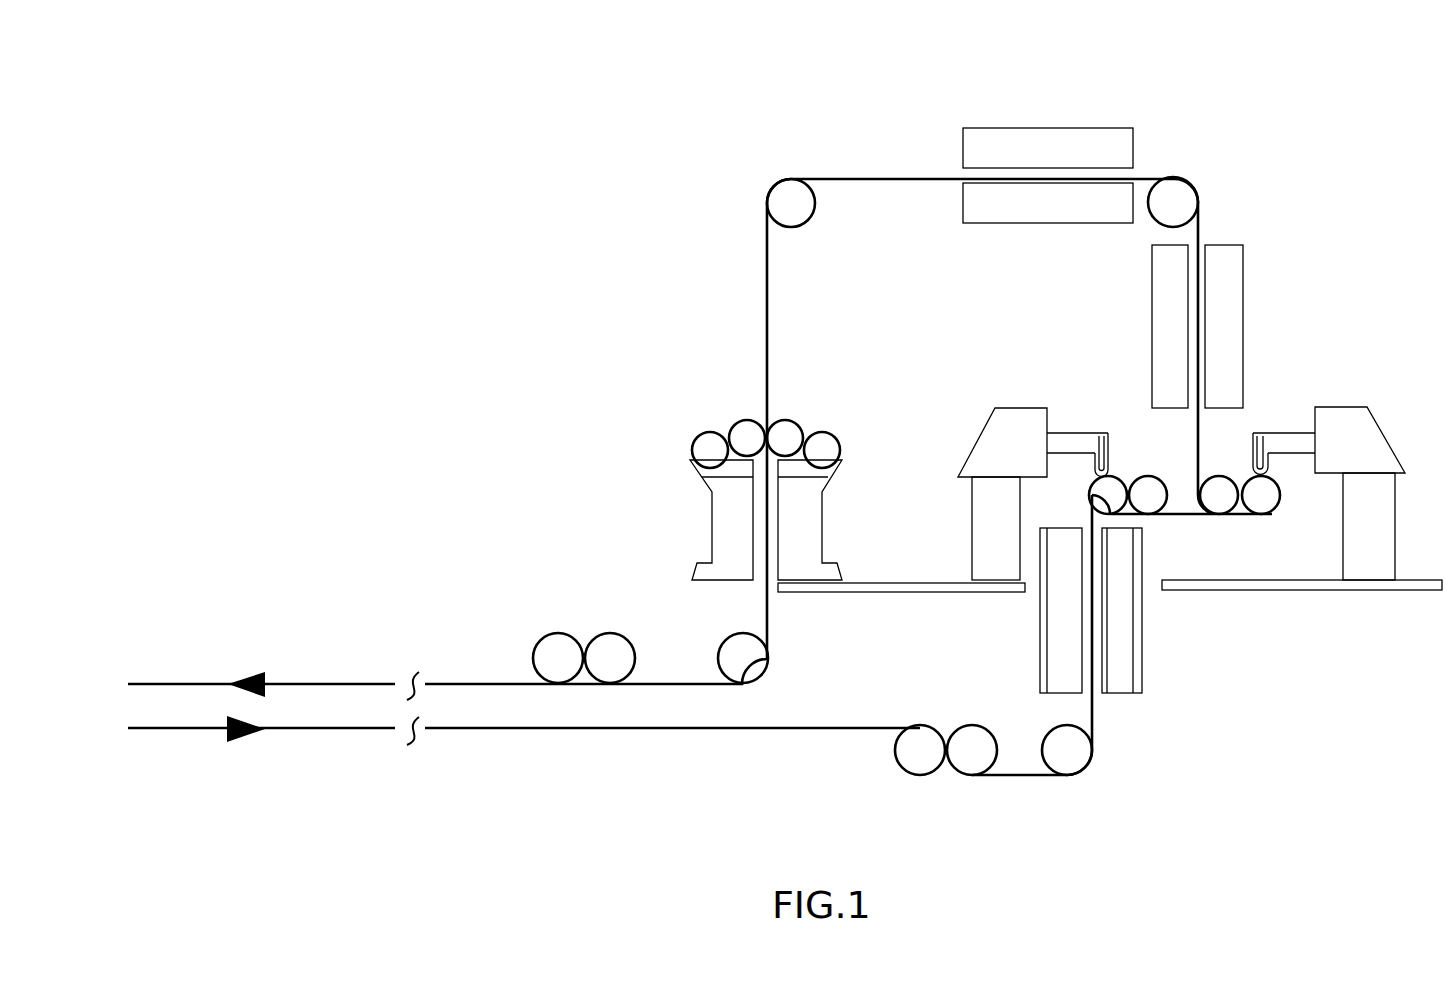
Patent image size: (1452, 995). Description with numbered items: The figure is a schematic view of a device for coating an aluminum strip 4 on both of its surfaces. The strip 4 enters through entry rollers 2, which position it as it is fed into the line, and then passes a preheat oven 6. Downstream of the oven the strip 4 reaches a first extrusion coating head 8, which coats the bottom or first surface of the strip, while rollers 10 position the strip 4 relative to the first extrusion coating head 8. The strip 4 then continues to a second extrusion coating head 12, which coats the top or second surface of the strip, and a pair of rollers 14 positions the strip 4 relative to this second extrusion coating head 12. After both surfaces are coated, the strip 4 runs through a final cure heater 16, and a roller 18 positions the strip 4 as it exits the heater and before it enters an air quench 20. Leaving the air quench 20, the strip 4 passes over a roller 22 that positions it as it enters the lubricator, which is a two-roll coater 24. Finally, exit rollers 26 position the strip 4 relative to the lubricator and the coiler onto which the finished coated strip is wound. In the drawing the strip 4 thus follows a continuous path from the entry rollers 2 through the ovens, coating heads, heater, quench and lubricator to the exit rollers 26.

The entry rollers 2 is at (1092, 780).
The aluminum strip 4 is at (830, 723).
The preheat oven 6 is at (1143, 638).
The first extrusion coating head 8 is at (1108, 427).
The rollers 10 is at (1168, 480).
The second extrusion coating head 12 is at (1405, 425).
The pair of rollers 14 is at (1203, 523).
The final cure heater 16 is at (1243, 323).
The roller 18 is at (1187, 193).
The air quench 20 is at (1033, 128).
The roller 22 is at (768, 193).
The two-roll coater 24 is at (700, 427).
The exit rollers 26 is at (763, 637).